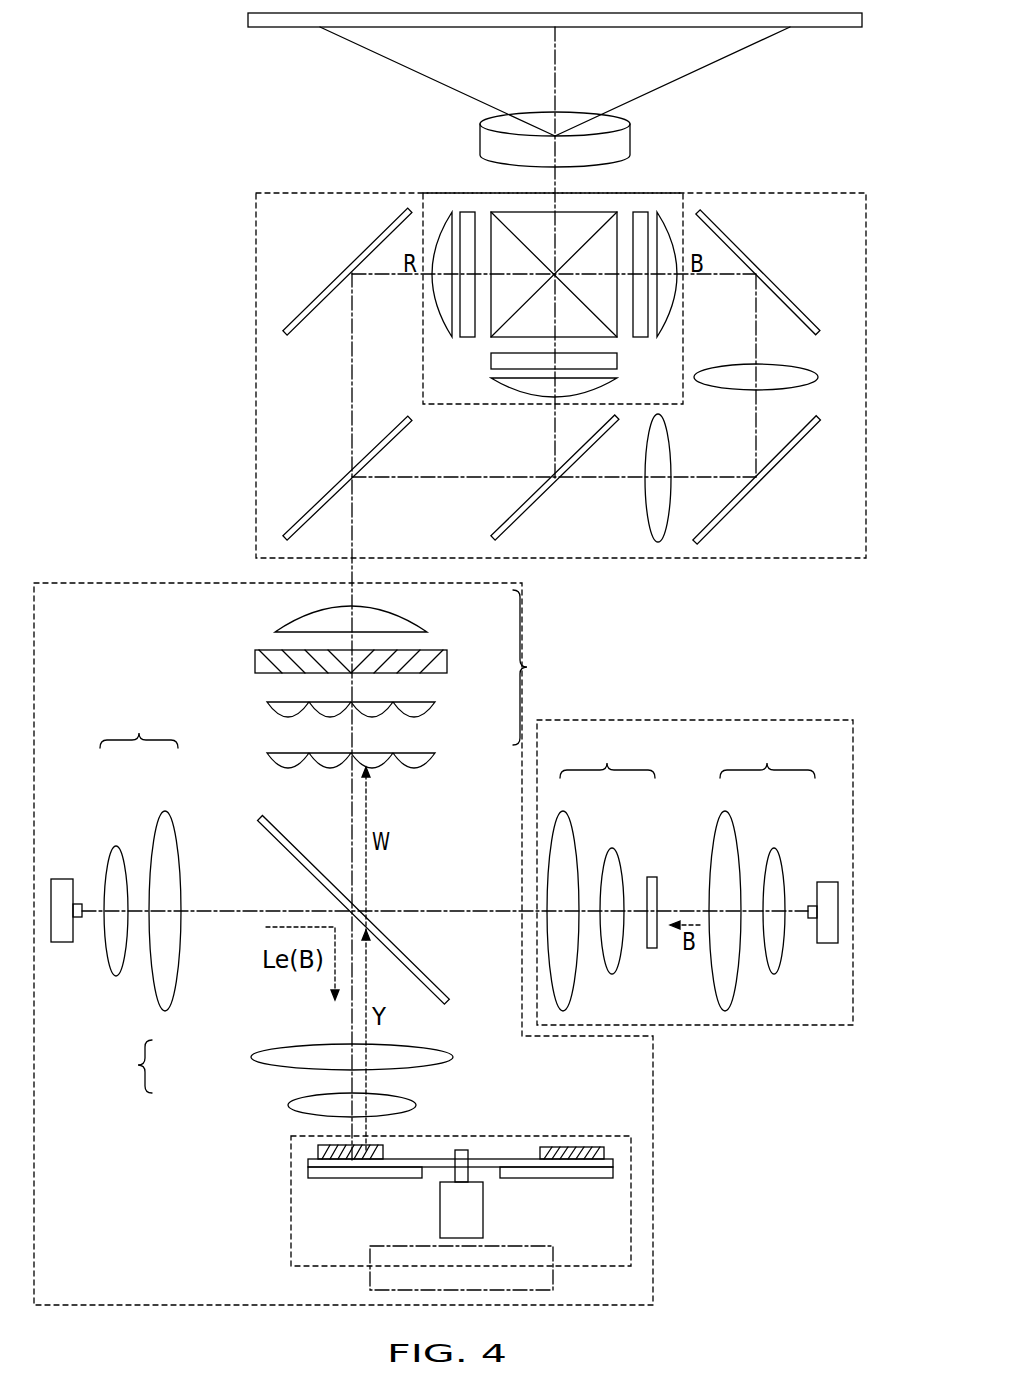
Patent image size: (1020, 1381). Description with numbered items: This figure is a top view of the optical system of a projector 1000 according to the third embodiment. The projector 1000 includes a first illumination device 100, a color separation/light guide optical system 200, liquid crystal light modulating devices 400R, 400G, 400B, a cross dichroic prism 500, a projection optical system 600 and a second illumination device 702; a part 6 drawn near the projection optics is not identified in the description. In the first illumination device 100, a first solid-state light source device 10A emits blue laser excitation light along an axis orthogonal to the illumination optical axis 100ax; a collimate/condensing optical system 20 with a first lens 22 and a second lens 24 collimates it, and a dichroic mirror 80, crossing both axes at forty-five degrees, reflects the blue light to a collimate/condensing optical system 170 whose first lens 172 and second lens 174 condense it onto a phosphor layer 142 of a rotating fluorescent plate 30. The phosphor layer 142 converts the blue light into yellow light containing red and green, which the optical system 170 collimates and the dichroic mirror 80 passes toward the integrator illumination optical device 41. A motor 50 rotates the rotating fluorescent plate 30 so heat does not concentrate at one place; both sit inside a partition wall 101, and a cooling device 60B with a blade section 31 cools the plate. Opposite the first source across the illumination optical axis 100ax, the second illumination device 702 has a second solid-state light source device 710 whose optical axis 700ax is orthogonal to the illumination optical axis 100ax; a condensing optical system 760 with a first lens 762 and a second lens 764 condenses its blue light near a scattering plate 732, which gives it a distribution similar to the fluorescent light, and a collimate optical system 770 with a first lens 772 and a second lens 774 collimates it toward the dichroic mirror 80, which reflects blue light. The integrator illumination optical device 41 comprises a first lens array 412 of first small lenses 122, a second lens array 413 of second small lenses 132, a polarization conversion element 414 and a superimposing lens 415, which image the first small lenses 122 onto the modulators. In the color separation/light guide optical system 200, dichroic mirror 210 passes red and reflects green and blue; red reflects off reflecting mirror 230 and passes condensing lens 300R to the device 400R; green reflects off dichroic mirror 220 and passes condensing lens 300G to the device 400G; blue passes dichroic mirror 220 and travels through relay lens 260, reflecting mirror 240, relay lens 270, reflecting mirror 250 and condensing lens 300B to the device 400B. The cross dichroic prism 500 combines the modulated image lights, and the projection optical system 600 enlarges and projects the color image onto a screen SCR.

The projector 1000 is at (210, 116).
The screen SCR is at (830, 29).
The projection optical device 6 is at (556, 118).
The projection optical system 600 is at (480, 136).
The color separation/light guide optical system 200 is at (807, 559).
The cross dichroic prism 500 is at (614, 208).
The liquid crystal light modulating device 400R is at (467, 212).
The liquid crystal light modulating device 400G is at (491, 361).
The liquid crystal light modulating device 400B is at (644, 212).
The condensing lens 300R is at (446, 212).
The condensing lens 300G is at (493, 384).
The condensing lens 300B is at (668, 212).
The dichroic mirror 210 is at (316, 505).
The dichroic mirror 220 is at (534, 508).
The reflecting mirror 230 is at (298, 320).
The reflecting mirror 240 is at (781, 463).
The reflecting mirror 250 is at (817, 328).
The relay lens 260 is at (645, 496).
The relay lens 270 is at (798, 368).
The first illumination device 100 is at (653, 1195).
The illumination optical axis 100ax is at (352, 572).
The integrator illumination optical device 41 is at (413, 679).
The first lens array 412 is at (437, 760).
The second lens array 413 is at (437, 705).
The polarization conversion element 414 is at (440, 648).
The superimposing lens 415 is at (408, 613).
The second small lens 132 is at (270, 711).
The first small lens 122 is at (272, 762).
The first solid-state light source device 10A is at (88, 874).
The collimate/condensing optical system 20 is at (140, 858).
The first lens 22 is at (127, 846).
The second lens 24 is at (177, 812).
The dichroic mirror 80 is at (430, 972).
The optical axis 700ax is at (457, 910).
The second illumination device 702 is at (805, 1026).
The second solid-state light source device 710 is at (802, 886).
The condensing optical system 760 is at (762, 871).
The first lens 762 is at (777, 850).
The second lens 764 is at (737, 823).
The scattering plate 732 is at (653, 877).
The collimate optical system 770 is at (601, 871).
The first lens 772 is at (620, 850).
The second lens 774 is at (570, 823).
The collimate/condensing optical system 170 is at (276, 1075).
The first lens 172 is at (290, 1100).
The second lens 174 is at (252, 1056).
The rotating fluorescent plate 30 is at (523, 1116).
The partition wall 101 is at (288, 1208).
The blade section 31 is at (382, 1180).
The phosphor layer 142 is at (318, 1138).
The motor 50 is at (483, 1207).
The cooling device 60B is at (556, 1284).